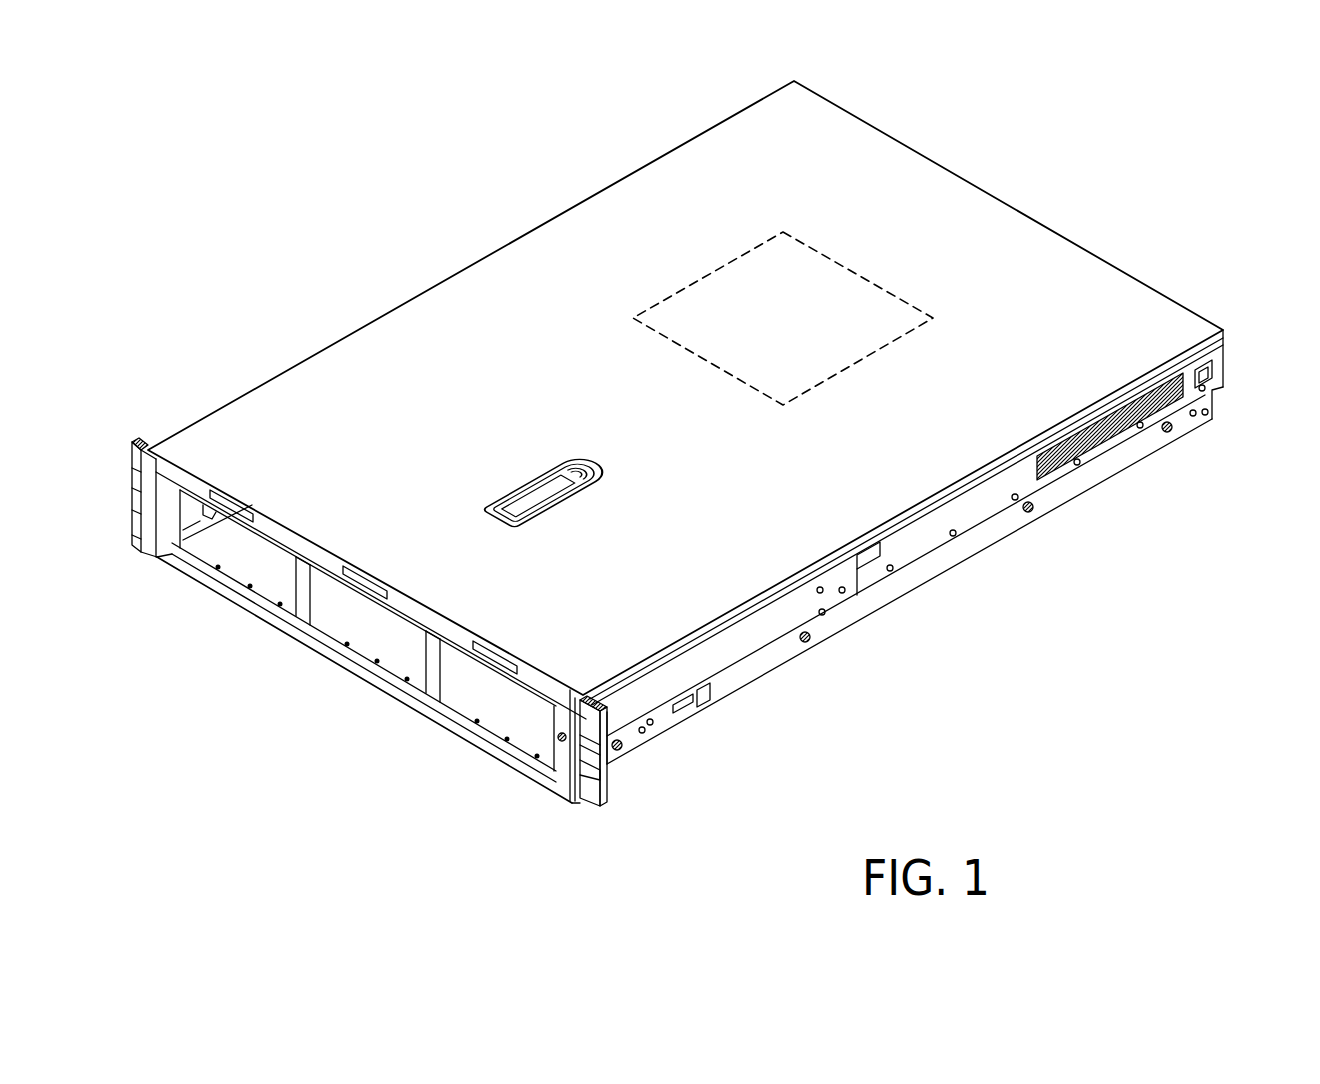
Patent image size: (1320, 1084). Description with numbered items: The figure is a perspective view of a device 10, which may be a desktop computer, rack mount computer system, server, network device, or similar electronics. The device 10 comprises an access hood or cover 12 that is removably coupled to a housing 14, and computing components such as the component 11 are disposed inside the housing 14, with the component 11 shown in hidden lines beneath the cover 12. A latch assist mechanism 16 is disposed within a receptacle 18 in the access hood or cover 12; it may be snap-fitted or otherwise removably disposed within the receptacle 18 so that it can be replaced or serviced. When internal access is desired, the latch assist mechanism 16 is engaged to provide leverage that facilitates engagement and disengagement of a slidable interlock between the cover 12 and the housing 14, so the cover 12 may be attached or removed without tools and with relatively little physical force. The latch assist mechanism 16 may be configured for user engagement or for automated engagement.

The device 10 is at (1084, 201).
The component 11 is at (918, 310).
The access hood or cover 12 is at (1136, 279).
The housing 14 is at (1222, 388).
The latch assist mechanism 16 is at (592, 434).
The receptacle 18 is at (604, 472).